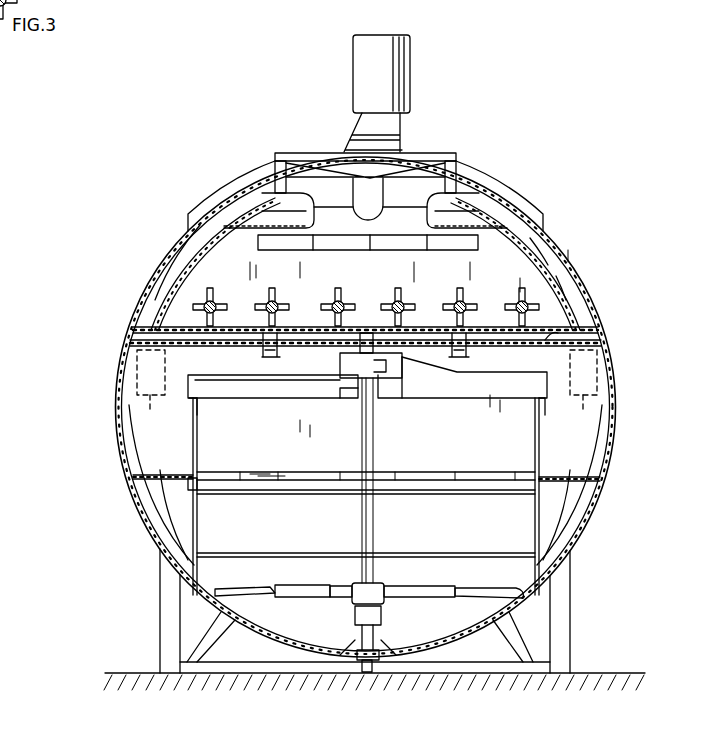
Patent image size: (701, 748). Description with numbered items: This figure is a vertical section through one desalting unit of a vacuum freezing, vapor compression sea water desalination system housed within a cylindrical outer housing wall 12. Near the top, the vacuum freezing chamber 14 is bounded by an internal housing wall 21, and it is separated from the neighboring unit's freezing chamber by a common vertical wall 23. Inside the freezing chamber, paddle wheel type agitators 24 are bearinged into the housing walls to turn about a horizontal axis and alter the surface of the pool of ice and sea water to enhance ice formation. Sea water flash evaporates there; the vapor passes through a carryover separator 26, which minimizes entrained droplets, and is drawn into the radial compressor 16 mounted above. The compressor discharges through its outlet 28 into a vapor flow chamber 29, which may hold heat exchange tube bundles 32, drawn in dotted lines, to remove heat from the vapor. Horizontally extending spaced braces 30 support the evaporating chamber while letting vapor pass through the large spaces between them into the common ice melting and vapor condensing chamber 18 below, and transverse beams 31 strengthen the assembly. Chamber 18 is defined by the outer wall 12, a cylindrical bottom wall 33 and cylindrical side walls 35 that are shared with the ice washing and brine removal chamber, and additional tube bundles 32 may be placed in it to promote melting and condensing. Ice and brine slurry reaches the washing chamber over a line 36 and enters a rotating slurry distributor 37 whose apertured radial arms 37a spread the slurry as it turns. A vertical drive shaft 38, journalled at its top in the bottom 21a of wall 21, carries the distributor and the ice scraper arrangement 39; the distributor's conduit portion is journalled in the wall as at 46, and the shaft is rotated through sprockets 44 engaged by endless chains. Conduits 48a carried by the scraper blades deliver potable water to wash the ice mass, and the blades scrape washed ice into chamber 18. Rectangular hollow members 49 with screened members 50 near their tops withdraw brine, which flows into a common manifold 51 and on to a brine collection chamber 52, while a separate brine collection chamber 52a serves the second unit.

The housing 12 is at (180, 245).
The vacuum freezing chamber 14 is at (340, 277).
The radial compressor 16 is at (375, 185).
The ice melting and vapor condensing chamber 18 is at (175, 449).
The internal housing wall 21 is at (216, 235).
The bottom of the wall 21a is at (555, 338).
The common vertical wall 23 is at (578, 277).
The paddle wheel type agitators 24 is at (244, 284).
The carryover separator 26 is at (420, 250).
The outlet 28 is at (268, 192).
The vapor flow chamber 29 is at (560, 240).
The braces 30 is at (130, 300).
The beams 31 is at (216, 340).
The heat exchange tube bundles 32 is at (628, 425).
The cylindrical bottom wall 33 is at (168, 472).
The cylindrical side walls 35 is at (186, 416).
The line 36 is at (372, 673).
The rotating slurry distributor 37 is at (396, 589).
The radial arms 37a is at (305, 590).
The vertical drive shaft 38 is at (375, 545).
The ice scraper arrangement 39 is at (455, 385).
The sprockets 44 is at (265, 352).
The journal 46 is at (380, 625).
The conduits 48a is at (285, 378).
The hollow members 49 is at (284, 535).
The screened members 50 is at (285, 478).
The common manifold 51 is at (190, 482).
The brine collection chamber 52 is at (178, 514).
The brine collection chamber 52a is at (575, 530).